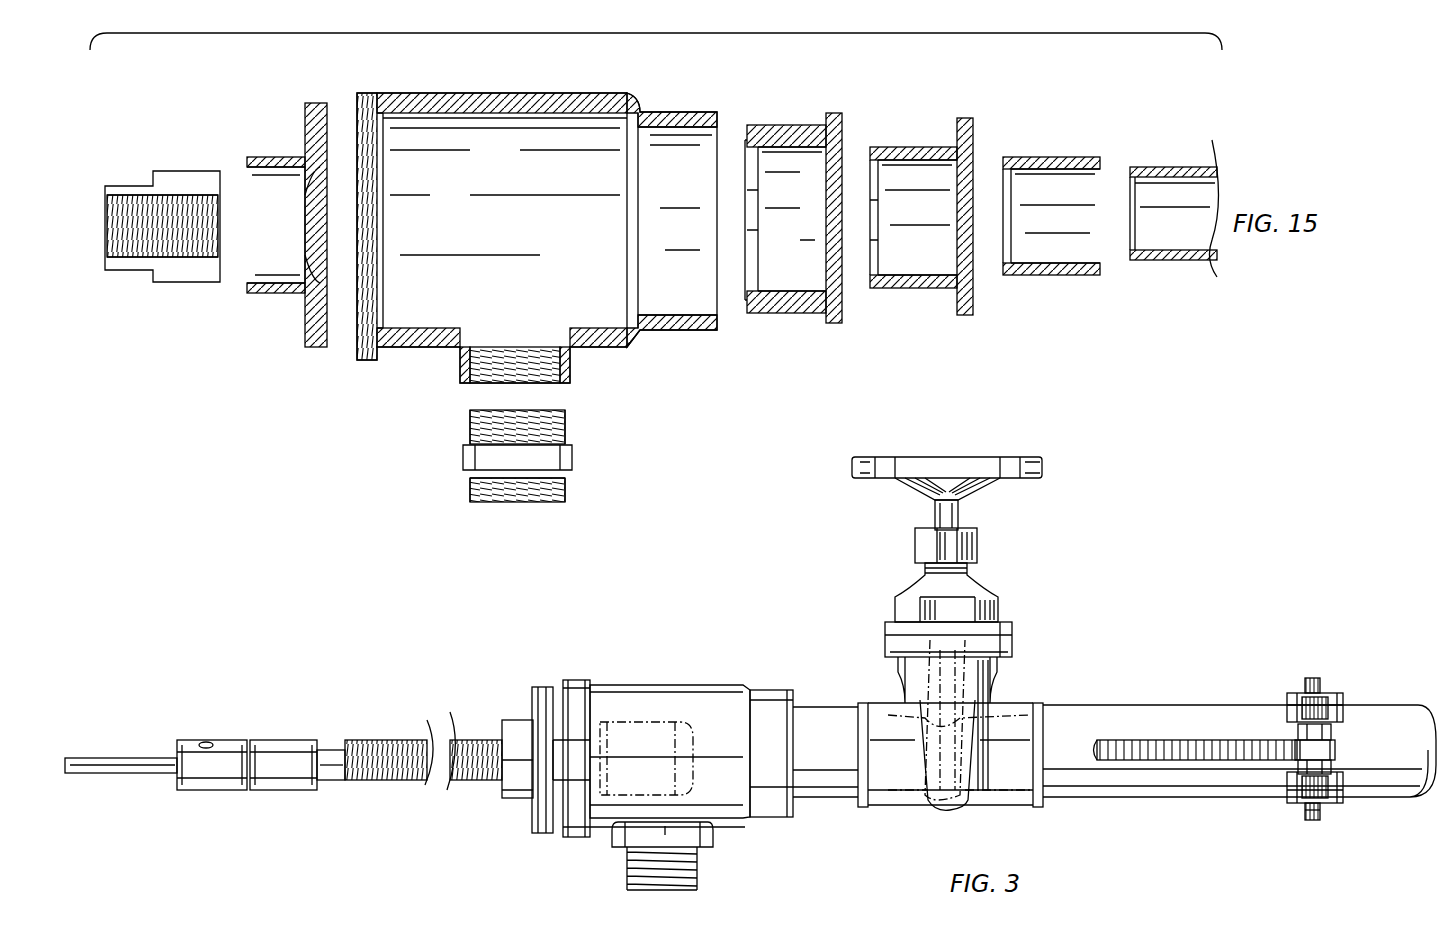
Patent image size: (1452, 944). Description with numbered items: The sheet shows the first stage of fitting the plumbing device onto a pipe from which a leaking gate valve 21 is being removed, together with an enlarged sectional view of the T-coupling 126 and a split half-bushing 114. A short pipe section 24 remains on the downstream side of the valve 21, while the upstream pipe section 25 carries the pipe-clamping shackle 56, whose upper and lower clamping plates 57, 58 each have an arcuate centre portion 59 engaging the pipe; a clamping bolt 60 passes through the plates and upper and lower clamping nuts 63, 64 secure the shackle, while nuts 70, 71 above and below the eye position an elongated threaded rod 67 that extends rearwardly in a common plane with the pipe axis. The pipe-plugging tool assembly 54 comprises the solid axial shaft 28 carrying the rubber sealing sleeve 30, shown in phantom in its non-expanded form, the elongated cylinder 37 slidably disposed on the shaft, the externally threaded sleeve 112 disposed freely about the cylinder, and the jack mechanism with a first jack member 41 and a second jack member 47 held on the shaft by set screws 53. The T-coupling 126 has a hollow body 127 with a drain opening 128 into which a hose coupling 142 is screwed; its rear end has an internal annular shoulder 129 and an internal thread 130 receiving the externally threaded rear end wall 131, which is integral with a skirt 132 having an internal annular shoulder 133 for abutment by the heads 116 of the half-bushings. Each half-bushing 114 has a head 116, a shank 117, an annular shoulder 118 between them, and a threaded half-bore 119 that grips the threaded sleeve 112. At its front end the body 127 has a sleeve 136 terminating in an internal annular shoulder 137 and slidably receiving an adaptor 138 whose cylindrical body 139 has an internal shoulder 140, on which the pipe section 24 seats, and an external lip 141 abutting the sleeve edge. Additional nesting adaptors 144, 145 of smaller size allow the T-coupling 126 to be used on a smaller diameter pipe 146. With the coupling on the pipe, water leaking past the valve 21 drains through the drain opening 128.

In FIG. 15, the half-bushing 114 is at (137, 239).
In FIG. 15, the head 116 is at (180, 270).
In FIG. 15, the shank 117 is at (117, 186).
In FIG. 15, the annular shoulder 118 is at (153, 178).
In FIG. 15, the threaded half-bore 119 is at (130, 235).
In FIG. 15, the T-coupling 126 is at (447, 93).
In FIG. 3, the T-coupling 126 is at (701, 738).
In FIG. 15, the hollow body 127 is at (578, 93).
In FIG. 3, the hollow body 127 is at (718, 685).
In FIG. 15, the drain opening 128 is at (515, 347).
In FIG. 15, the internal annular shoulder 129 is at (375, 130).
In FIG. 15, the internal thread 130 is at (378, 315).
In FIG. 15, the rear end wall 131 is at (312, 325).
In FIG. 3, the rear end wall 131 is at (540, 820).
In FIG. 15, the skirt 132 is at (290, 157).
In FIG. 3, the skirt 132 is at (515, 722).
In FIG. 15, the internal annular shoulder 133 is at (305, 275).
In FIG. 15, the sleeve 136 is at (688, 328).
In FIG. 3, the sleeve 136 is at (765, 820).
In FIG. 15, the internal annular shoulder 137 is at (645, 138).
In FIG. 15, the adaptor 138 is at (790, 125).
In FIG. 15, the cylindrical body 139 is at (800, 315).
In FIG. 15, the annular shoulder 140 is at (762, 150).
In FIG. 15, the external annular lip 141 is at (838, 323).
In FIG. 3, the external annular lip 141 is at (787, 690).
In FIG. 15, the hose coupling 142 is at (470, 470).
In FIG. 3, the hose coupling 142 is at (630, 872).
In FIG. 15, the nesting adaptor 144 is at (918, 147).
In FIG. 15, the nesting adaptor 145 is at (1048, 157).
In FIG. 15, the smaller diameter pipe 146 is at (1175, 260).
In FIG. 3, the gate valve 21 is at (1000, 570).
In FIG. 3, the pipe section 24 is at (838, 780).
In FIG. 3, the pipe section 25 is at (1130, 775).
In FIG. 3, the axial shaft 28 is at (95, 775).
In FIG. 3, the sealing sleeve 30 is at (640, 735).
In FIG. 3, the elongated cylinder 37 is at (333, 780).
In FIG. 3, the first jack member 41 is at (288, 738).
In FIG. 3, the second jack member 47 is at (210, 788).
In FIG. 3, the set screw 53 is at (207, 742).
In FIG. 3, the pipe-plugging tool assembly 54 is at (365, 738).
In FIG. 3, the pipe-clamping shackle 56 is at (1320, 717).
In FIG. 3, the upper clamping plate 57 is at (1340, 712).
In FIG. 3, the lower clamping plate 58 is at (1343, 780).
In FIG. 3, the arcuate centre portion 59 is at (1320, 695).
In FIG. 3, the clamping bolt 60 is at (1313, 820).
In FIG. 3, the upper clamping nut 63 is at (1300, 700).
In FIG. 3, the lower clamping nut 64 is at (1300, 785).
In FIG. 3, the threaded rod 67 is at (1160, 740).
In FIG. 3, the nut 70 is at (1335, 735).
In FIG. 3, the nut 71 is at (1335, 762).
In FIG. 3, the threaded sleeve 112 is at (407, 780).